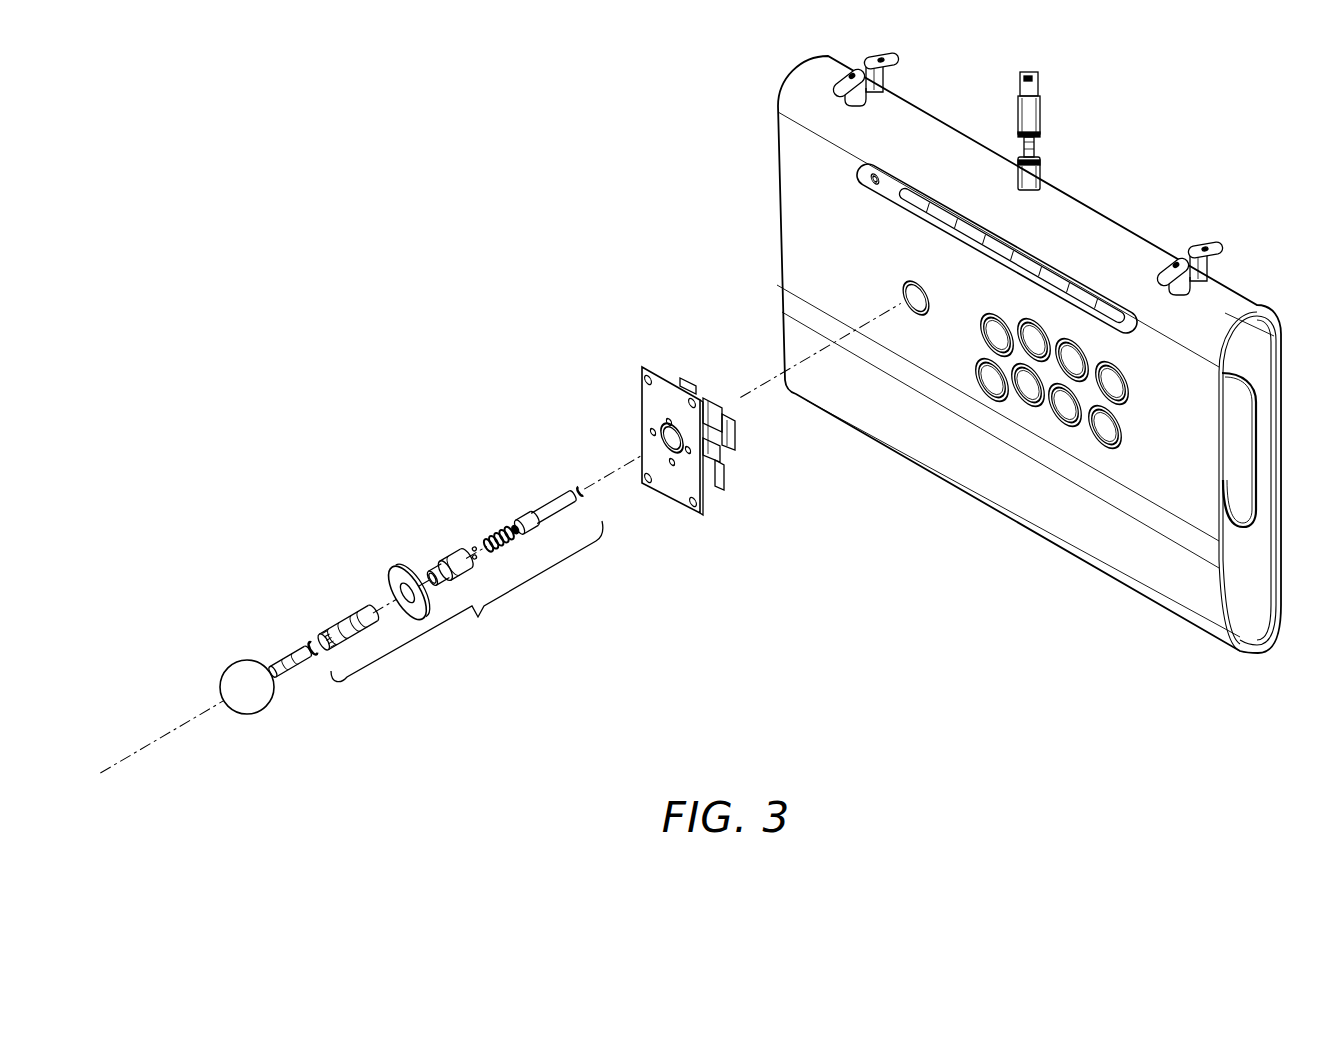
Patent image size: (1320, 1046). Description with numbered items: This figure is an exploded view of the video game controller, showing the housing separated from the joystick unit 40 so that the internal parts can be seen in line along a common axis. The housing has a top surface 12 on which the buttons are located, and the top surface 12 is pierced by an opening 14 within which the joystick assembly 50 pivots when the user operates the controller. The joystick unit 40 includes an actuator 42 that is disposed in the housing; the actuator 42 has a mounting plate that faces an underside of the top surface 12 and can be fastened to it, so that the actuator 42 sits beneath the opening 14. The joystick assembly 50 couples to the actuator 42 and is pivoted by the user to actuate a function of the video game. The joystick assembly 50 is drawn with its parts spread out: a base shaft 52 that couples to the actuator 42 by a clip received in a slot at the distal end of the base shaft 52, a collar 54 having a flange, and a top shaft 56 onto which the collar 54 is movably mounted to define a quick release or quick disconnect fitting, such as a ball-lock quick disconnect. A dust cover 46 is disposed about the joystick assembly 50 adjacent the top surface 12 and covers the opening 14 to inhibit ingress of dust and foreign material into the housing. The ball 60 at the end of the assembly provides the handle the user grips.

The top surface 12 is at (811, 214).
The opening 14 is at (891, 281).
The joystick unit 40 is at (308, 430).
The actuator 42 is at (718, 530).
The dust cover 46 is at (396, 566).
The joystick assembly 50 is at (467, 601).
The base shaft 52 is at (546, 489).
The collar 54 is at (446, 545).
The top shaft 56 is at (338, 597).
The ball handle 60 is at (238, 667).